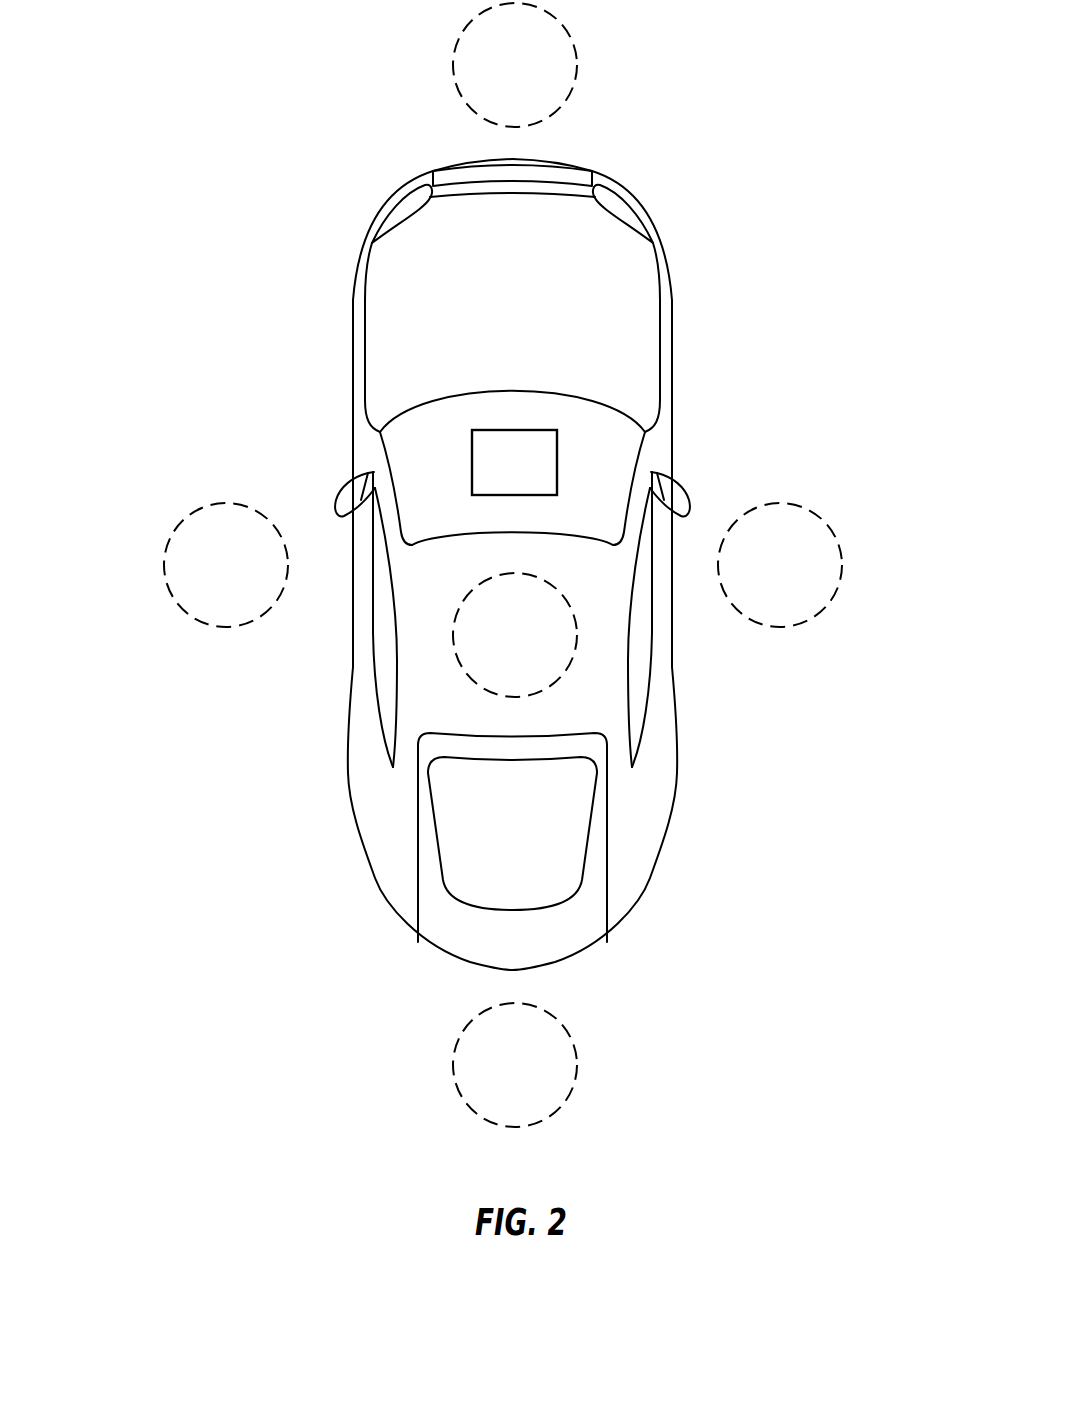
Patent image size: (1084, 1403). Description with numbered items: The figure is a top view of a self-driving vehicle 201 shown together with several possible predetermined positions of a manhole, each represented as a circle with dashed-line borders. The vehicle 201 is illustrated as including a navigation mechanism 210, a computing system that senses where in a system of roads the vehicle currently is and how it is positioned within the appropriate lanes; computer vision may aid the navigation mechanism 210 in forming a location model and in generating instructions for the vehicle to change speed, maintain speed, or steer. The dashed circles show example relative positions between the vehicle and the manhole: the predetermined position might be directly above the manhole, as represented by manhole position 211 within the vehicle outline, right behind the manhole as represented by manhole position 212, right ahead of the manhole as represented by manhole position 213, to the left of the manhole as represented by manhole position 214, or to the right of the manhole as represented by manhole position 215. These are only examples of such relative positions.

The self-driving vehicle 201 is at (353, 337).
The navigation mechanism 210 is at (533, 473).
The manhole position 211 is at (563, 595).
The manhole position 212 is at (576, 55).
The manhole position 213 is at (565, 1032).
The manhole position 214 is at (813, 510).
The manhole position 215 is at (172, 537).